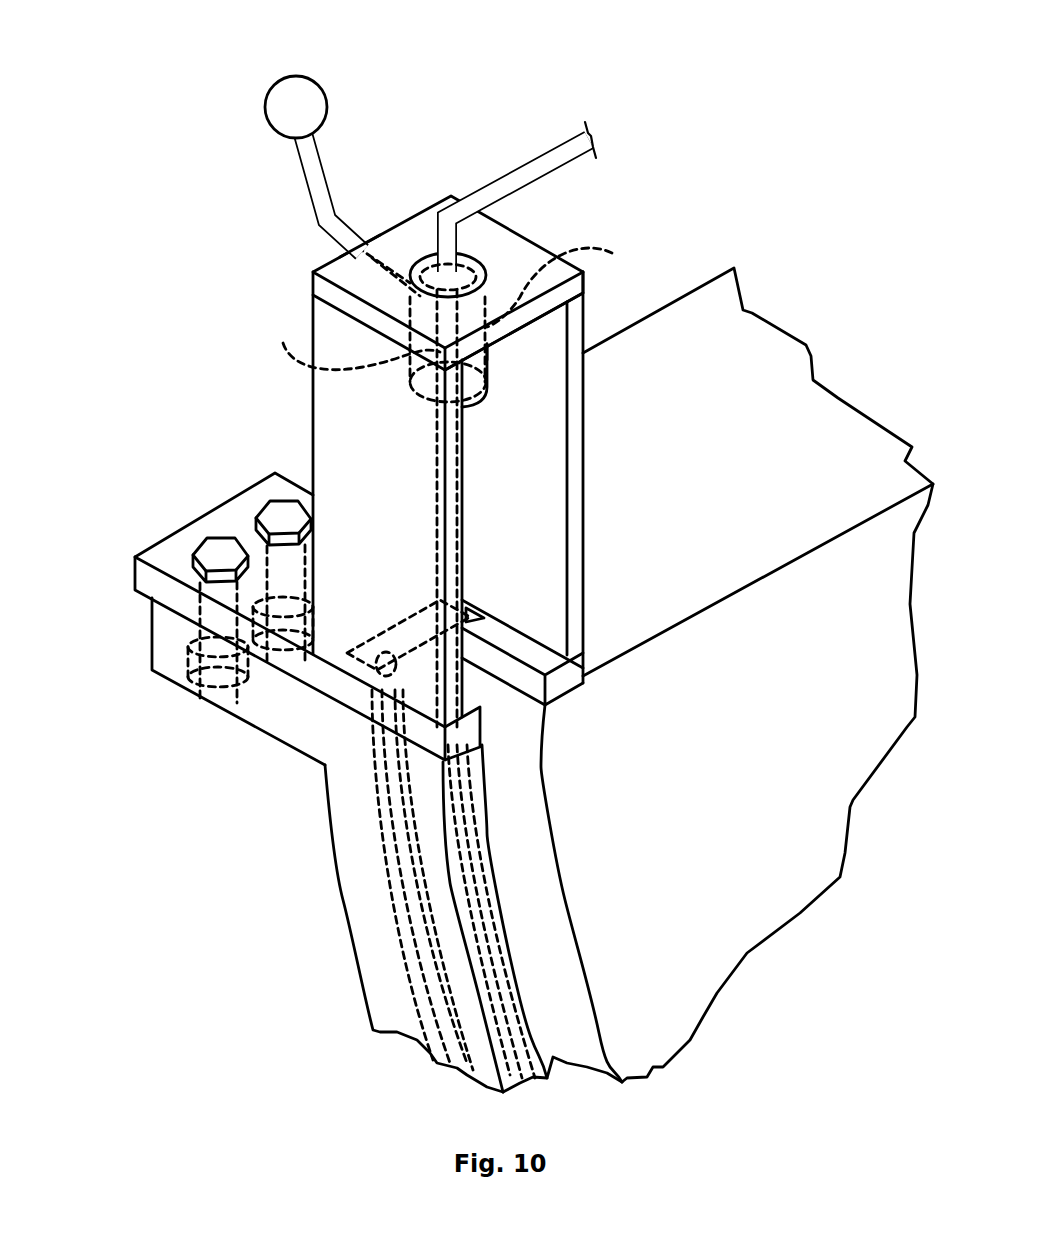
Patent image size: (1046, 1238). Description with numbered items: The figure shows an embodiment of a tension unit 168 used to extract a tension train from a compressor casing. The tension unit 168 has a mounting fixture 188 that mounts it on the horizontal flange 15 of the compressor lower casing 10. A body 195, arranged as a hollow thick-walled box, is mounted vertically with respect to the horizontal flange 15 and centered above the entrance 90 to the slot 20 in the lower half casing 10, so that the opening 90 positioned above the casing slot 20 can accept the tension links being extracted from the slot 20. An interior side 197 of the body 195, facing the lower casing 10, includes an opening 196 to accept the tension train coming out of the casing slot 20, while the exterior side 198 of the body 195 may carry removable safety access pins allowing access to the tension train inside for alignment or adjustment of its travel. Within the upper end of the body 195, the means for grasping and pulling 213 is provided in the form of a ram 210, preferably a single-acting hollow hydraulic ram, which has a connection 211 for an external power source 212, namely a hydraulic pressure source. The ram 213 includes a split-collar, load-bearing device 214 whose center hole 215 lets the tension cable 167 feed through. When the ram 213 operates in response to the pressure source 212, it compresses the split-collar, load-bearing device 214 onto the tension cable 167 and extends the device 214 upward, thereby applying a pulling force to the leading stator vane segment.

The compressor lower casing 10 is at (365, 847).
The horizontal flange 15 is at (836, 441).
The slot 20 is at (507, 825).
The opening 90 is at (480, 657).
The tension cable 167 is at (545, 168).
The tension unit 168 is at (217, 230).
The mounting fixture 188 is at (135, 556).
The body 195 is at (300, 423).
The opening 196 is at (537, 495).
The interior side 197 is at (574, 524).
The exterior side 198 is at (313, 470).
The ram 210 is at (487, 360).
The connection 211 is at (322, 168).
The power source 212 is at (302, 109).
The means for grasping and pulling 213 is at (413, 256).
The split-collar load-bearing device 214 is at (575, 285).
The center hole 215 is at (344, 345).